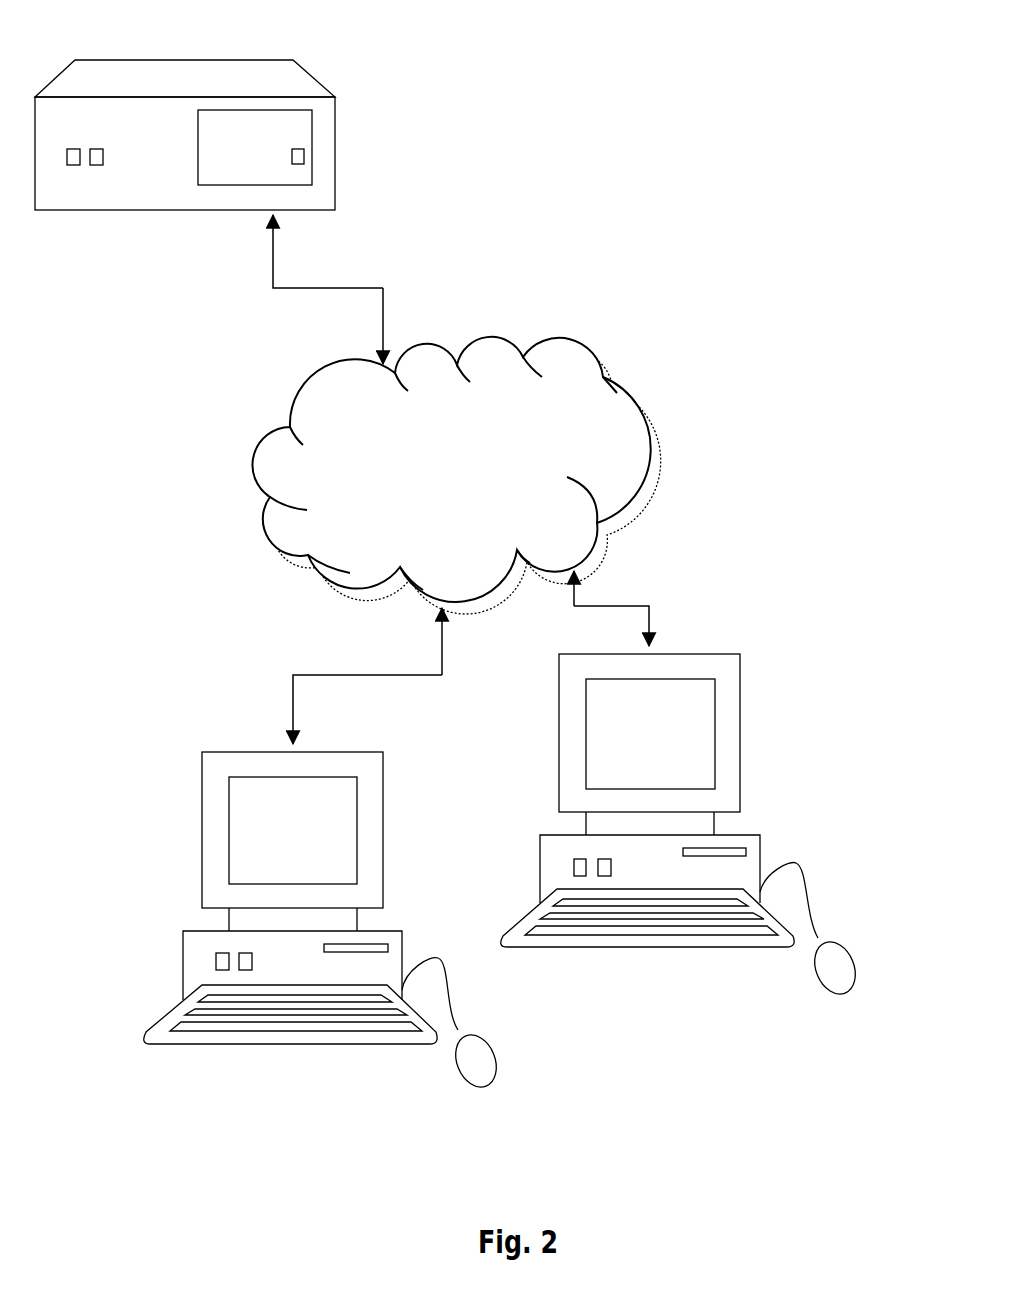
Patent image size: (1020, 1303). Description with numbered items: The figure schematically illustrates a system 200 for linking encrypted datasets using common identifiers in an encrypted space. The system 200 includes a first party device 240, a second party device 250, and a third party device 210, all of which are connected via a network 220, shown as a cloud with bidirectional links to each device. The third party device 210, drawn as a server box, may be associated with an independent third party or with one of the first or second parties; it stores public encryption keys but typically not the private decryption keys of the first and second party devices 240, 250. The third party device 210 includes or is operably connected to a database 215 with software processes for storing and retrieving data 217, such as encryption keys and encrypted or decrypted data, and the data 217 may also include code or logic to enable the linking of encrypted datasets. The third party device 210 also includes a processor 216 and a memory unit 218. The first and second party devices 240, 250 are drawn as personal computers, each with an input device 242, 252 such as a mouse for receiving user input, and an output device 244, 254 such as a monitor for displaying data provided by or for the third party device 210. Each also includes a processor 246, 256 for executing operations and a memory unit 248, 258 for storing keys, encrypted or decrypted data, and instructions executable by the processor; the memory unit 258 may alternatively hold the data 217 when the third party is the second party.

The system 200 is at (735, 216).
The third party device 210 is at (160, 70).
The database 215 is at (257, 154).
The processor 216 is at (72, 167).
The data 217 is at (297, 166).
The memory unit 218 is at (97, 148).
The network 220 is at (747, 336).
The first party device 240 is at (327, 880).
The input device 242 is at (486, 1045).
The output device 244 is at (330, 823).
The processor 246 is at (215, 962).
The memory unit 248 is at (238, 952).
The second party device 250 is at (686, 786).
The input device 252 is at (843, 950).
The output device 254 is at (687, 729).
The processor 256 is at (574, 866).
The memory unit 258 is at (600, 858).